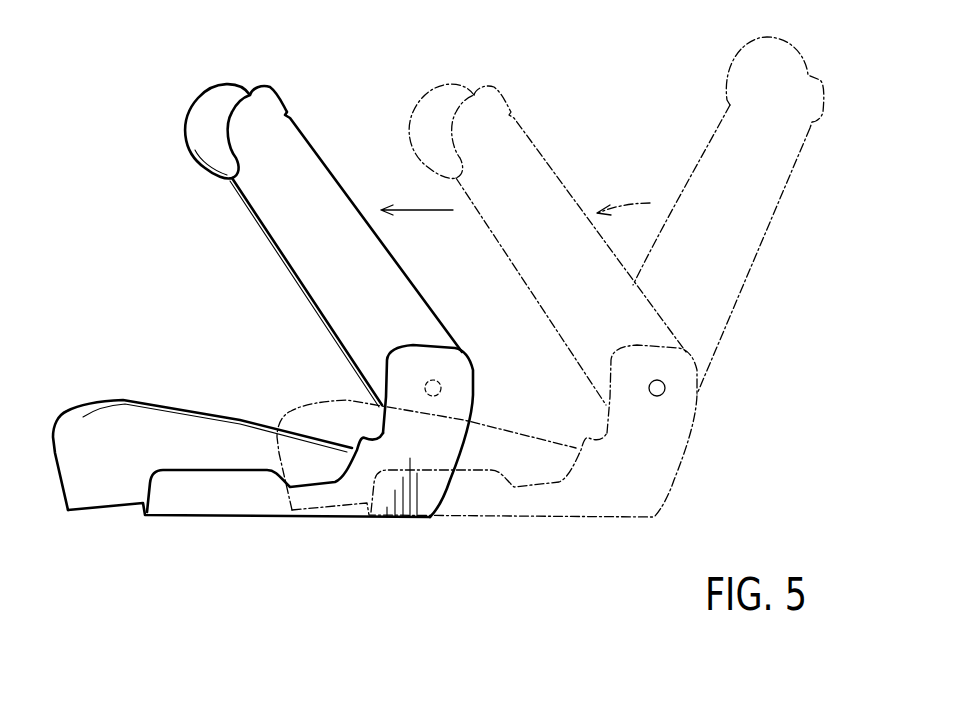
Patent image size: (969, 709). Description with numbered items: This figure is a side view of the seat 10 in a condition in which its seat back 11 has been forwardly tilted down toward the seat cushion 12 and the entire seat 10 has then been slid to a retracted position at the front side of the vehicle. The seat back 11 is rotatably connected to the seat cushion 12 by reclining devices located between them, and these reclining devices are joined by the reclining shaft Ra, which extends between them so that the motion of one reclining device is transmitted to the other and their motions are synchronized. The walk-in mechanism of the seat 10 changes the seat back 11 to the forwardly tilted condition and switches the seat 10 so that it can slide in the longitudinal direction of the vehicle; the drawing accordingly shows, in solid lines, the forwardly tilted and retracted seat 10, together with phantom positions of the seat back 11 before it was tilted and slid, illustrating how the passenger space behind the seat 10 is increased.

The seat 10 is at (453, 277).
The seat back 11 is at (307, 168).
The seat cushion 12 is at (317, 423).
The reclining shaft Ra is at (434, 379).